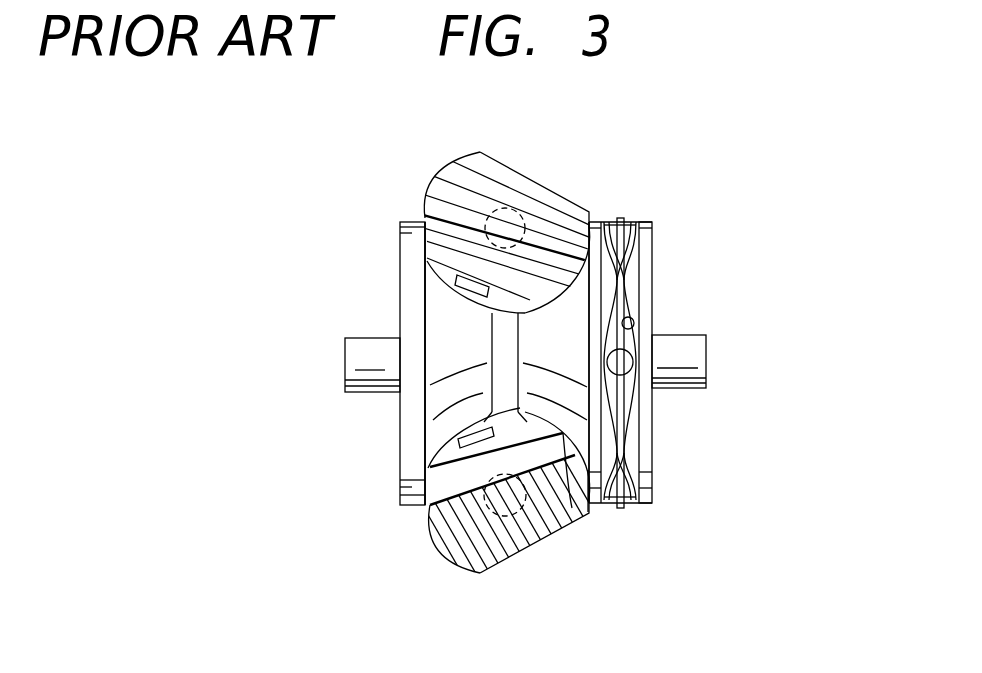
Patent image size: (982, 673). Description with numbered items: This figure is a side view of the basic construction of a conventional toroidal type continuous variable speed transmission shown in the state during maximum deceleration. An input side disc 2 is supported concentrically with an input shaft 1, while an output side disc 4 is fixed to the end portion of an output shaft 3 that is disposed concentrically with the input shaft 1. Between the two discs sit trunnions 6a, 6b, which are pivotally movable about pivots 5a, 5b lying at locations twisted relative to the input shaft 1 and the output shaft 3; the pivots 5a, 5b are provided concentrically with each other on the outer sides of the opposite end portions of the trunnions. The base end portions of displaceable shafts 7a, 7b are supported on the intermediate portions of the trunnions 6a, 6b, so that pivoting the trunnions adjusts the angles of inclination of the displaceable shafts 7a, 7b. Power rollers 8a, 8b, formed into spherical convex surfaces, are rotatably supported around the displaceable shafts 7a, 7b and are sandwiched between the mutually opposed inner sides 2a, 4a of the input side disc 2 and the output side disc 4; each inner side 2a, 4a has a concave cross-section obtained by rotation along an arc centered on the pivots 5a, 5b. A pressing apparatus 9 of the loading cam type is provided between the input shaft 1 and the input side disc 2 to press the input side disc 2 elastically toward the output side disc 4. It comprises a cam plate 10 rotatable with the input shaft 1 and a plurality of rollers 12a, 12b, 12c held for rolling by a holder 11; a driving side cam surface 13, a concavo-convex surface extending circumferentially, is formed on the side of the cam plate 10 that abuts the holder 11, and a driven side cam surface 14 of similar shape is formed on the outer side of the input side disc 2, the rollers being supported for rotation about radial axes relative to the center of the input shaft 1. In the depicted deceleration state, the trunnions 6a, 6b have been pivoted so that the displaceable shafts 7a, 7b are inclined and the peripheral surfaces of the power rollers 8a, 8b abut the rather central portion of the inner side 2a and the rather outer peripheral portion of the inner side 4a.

The input shaft 1 is at (698, 357).
The input side disc 2 is at (603, 250).
The inner side of input side disc 2a is at (576, 517).
The output shaft 3 is at (356, 368).
The output side disc 4 is at (412, 310).
The inner side of output side disc 4a is at (428, 316).
The pivot 5a is at (504, 213).
The pivot 5b is at (505, 516).
The trunnion 6a is at (465, 165).
The trunnion 6b is at (458, 552).
The displaceable shaft 7a is at (457, 286).
The displaceable shaft 7b is at (455, 432).
The power roller 8a is at (428, 243).
The power roller 8b is at (425, 480).
The pressing apparatus 9 is at (658, 201).
The cam plate 10 is at (643, 273).
The holder 11 is at (622, 218).
The roller 12a is at (607, 248).
The roller 12b is at (632, 360).
The roller 12c is at (635, 508).
The driving side cam surface 13 is at (632, 322).
The driven side cam surface 14 is at (640, 405).